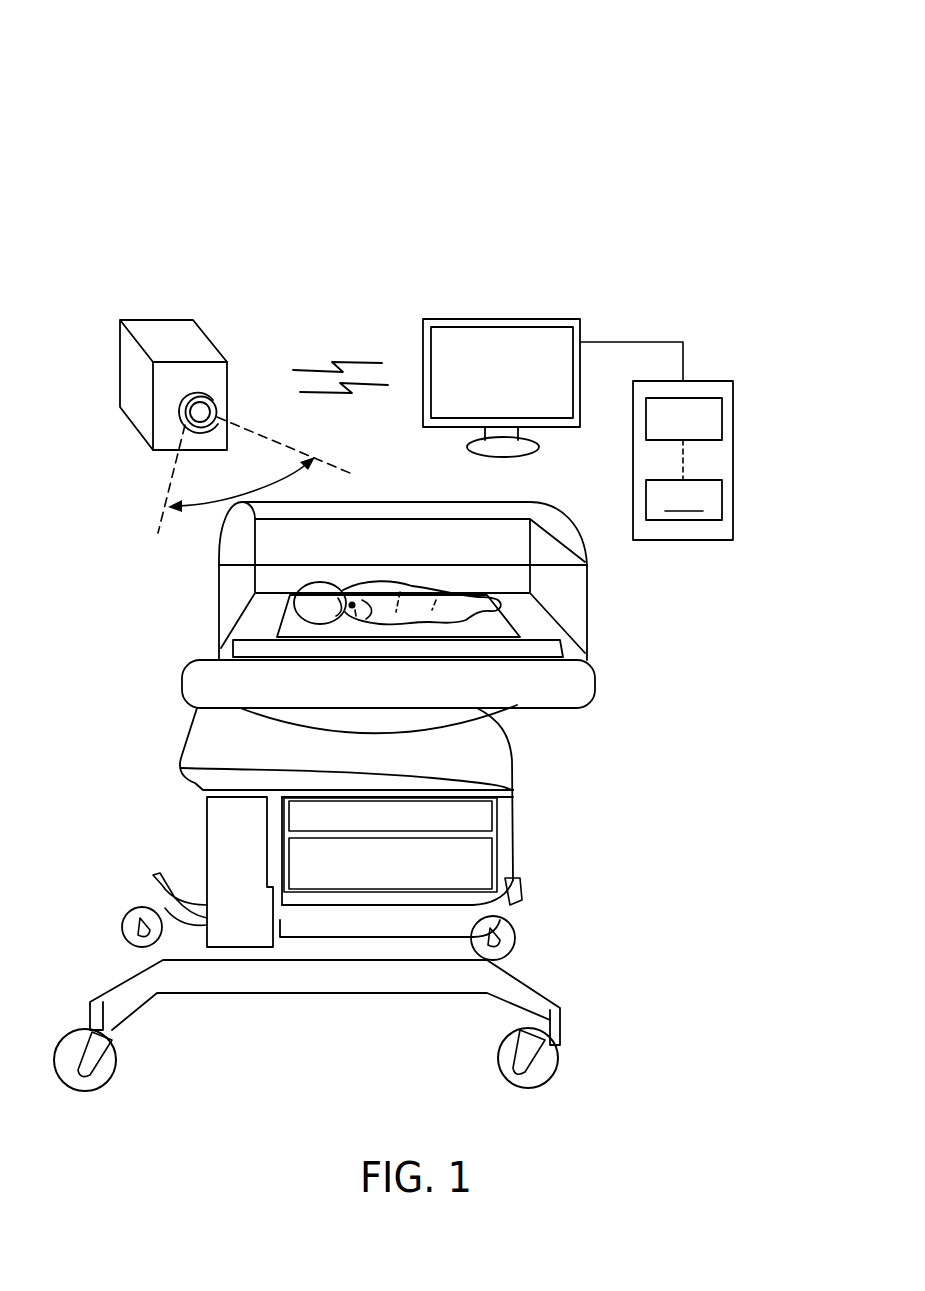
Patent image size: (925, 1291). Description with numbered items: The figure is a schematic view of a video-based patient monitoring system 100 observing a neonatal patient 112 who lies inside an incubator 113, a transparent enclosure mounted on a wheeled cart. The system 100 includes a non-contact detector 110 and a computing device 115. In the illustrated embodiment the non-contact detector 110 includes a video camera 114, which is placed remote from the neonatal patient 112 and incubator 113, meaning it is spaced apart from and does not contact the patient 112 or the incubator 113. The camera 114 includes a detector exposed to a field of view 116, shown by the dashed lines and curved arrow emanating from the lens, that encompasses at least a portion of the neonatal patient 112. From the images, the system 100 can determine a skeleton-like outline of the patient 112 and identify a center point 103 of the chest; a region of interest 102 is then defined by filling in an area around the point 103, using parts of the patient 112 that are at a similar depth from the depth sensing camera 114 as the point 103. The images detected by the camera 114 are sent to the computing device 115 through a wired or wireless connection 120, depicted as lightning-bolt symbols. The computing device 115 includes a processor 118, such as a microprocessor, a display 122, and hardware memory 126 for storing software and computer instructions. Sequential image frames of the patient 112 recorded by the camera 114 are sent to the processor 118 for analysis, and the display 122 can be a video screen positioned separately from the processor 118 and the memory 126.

The video-based patient monitoring system 100 is at (136, 61).
The non-contact detector 110 is at (108, 266).
The neonatal patient 112 is at (160, 598).
The incubator 113 is at (144, 681).
The region of interest (ROI) 102 is at (330, 606).
The center point of the chest 103 is at (357, 605).
The video camera 114 is at (228, 360).
The computing device 115 is at (738, 344).
The field of view (FOV) 116 is at (283, 492).
The processor 118 is at (722, 415).
The wired or wireless connection 120 is at (367, 362).
The display 122 is at (533, 318).
The hardware memory 126 is at (684, 500).